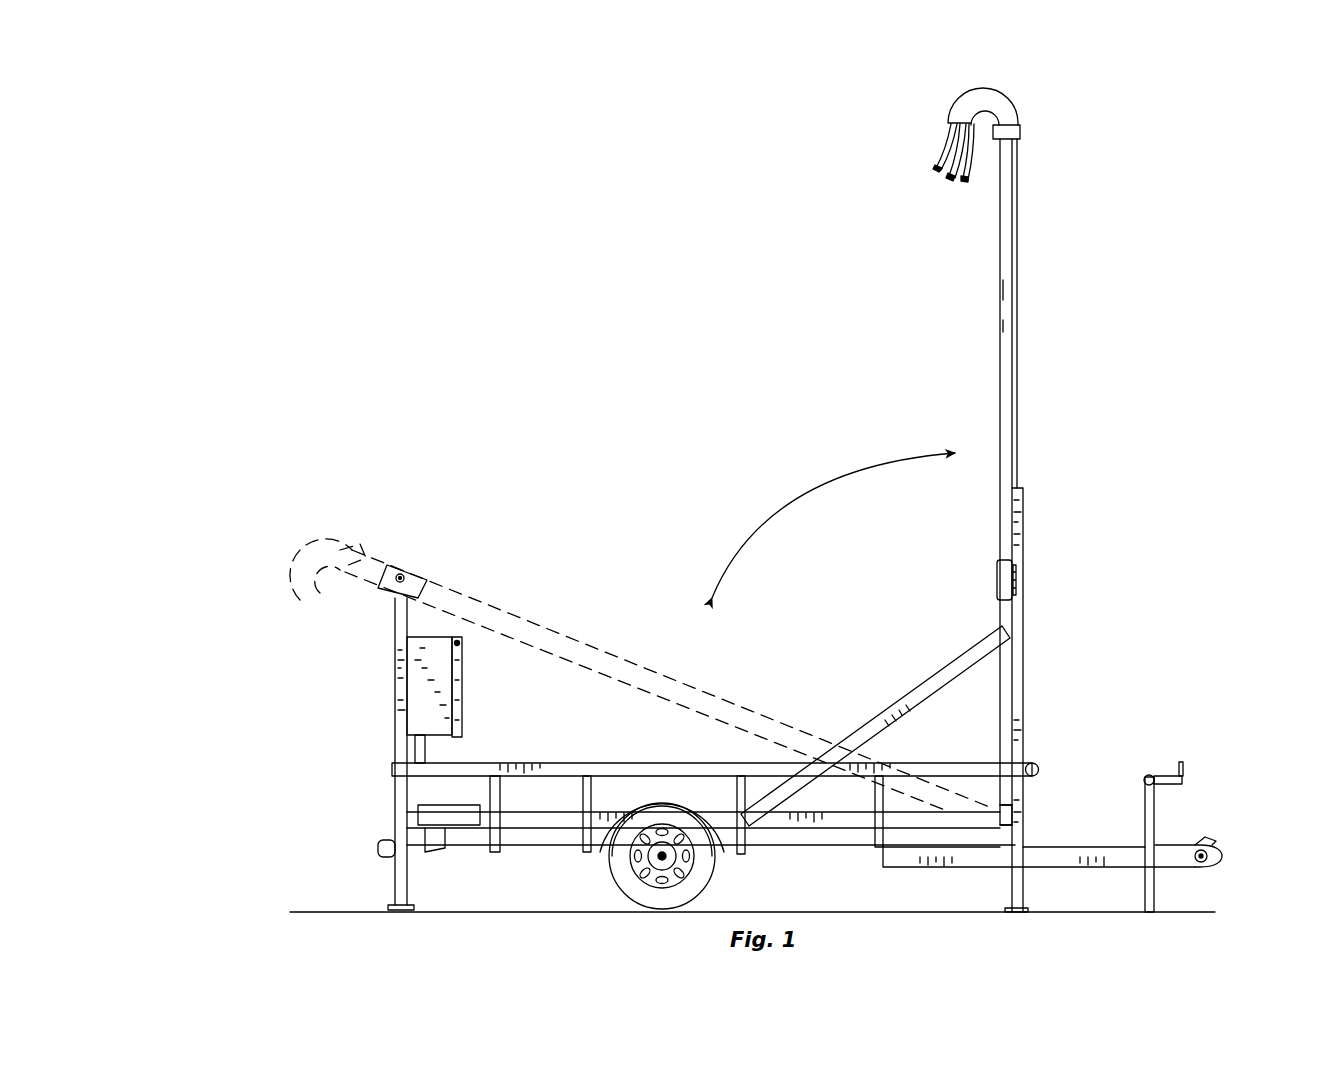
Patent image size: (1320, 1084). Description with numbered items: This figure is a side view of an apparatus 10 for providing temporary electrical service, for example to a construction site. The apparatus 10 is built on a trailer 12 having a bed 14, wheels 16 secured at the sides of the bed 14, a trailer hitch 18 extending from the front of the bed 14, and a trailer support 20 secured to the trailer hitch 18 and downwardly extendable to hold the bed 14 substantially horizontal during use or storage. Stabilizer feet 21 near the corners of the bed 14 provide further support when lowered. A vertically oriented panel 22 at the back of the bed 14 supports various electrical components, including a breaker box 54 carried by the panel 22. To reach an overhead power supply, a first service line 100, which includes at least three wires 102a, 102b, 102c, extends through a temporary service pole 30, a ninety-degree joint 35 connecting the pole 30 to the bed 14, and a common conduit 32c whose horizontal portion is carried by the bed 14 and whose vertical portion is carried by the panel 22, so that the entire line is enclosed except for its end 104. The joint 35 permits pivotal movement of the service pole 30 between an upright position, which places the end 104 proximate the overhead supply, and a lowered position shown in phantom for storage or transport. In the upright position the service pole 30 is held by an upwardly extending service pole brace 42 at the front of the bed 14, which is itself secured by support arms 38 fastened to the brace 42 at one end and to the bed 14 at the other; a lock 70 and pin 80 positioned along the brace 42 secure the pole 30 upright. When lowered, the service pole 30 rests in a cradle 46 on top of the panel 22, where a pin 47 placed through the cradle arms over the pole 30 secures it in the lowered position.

The apparatus 10 is at (516, 376).
The trailer 12 is at (272, 690).
The bed 14 is at (340, 804).
The wheels 16 is at (636, 863).
The trailer hitch 18 is at (1165, 847).
The trailer support 20 is at (1152, 893).
The stabilizer feet 21 is at (393, 889).
The panel 22 is at (403, 650).
The temporary service pole 30 is at (1012, 268).
The common conduit 32c is at (406, 748).
The 90° joint 35 is at (1017, 813).
The support arms 38 is at (949, 682).
The service pole brace 42 is at (1020, 505).
The cradle 46 is at (412, 586).
The pin 47 is at (402, 574).
The breaker box 54 is at (420, 715).
The lock 70 is at (954, 565).
The pin 80 is at (1012, 555).
The first service line 100 is at (863, 182).
The wire 102a is at (946, 162).
The wire 102b is at (957, 181).
The wire 102c is at (965, 183).
The end 104 is at (983, 166).